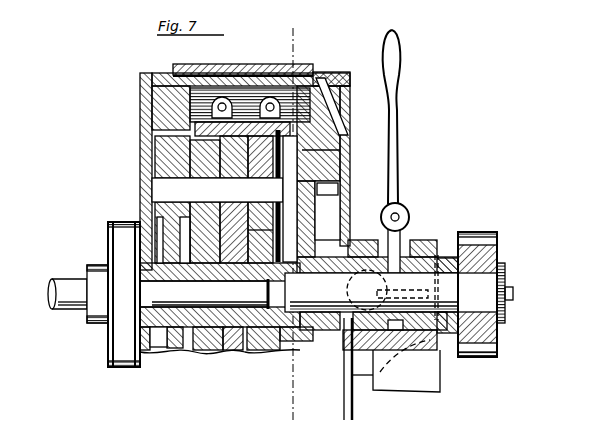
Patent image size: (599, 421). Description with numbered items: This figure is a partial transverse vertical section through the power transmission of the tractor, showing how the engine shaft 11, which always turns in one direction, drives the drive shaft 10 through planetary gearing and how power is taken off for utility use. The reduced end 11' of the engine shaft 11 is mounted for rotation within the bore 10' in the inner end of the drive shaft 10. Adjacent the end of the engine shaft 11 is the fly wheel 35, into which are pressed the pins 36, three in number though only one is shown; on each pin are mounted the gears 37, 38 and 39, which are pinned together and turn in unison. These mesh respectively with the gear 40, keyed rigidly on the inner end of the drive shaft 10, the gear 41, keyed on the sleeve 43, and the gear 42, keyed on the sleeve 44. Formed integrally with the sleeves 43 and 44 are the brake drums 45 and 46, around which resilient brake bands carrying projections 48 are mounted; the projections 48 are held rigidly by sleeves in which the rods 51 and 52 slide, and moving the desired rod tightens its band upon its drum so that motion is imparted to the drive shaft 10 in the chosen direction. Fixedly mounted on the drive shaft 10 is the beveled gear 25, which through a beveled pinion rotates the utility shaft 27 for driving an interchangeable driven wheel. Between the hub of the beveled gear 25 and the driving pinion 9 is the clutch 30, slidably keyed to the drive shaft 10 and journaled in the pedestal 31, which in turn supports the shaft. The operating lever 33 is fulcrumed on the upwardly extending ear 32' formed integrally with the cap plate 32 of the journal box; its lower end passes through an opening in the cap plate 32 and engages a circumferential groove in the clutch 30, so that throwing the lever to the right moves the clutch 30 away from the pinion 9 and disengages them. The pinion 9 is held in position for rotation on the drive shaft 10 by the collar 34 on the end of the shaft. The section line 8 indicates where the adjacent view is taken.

The section line 8- 8 is at (305, 23).
The driving pinion 9 is at (496, 249).
The drive shaft 10 is at (341, 280).
The bore 10' is at (112, 348).
The engine shaft 11 is at (65, 308).
The reduced end 11' is at (101, 309).
The beveled gear 25 is at (338, 133).
The utility shaft 27 is at (330, 356).
The clutch 30 is at (422, 240).
The pedestal 31 is at (441, 379).
The cap plate 32 is at (424, 219).
The ear 32' is at (431, 179).
The operating lever 33 is at (400, 67).
The collar 34 is at (505, 279).
The fly wheel 35 is at (162, 110).
The pins 36 is at (168, 188).
The gear 37 is at (223, 98).
The gear 38 is at (266, 98).
The gear 39 is at (346, 78).
The gear 40 is at (172, 366).
The gear 41 is at (203, 352).
The gear 42 is at (263, 349).
The sleeve 43 is at (230, 349).
The sleeve 44 is at (241, 351).
The brake drum 45 is at (302, 173).
The brake drum 46 is at (342, 196).
The projections 48 is at (300, 80).
The rod 51 is at (322, 80).
The rod 52 is at (238, 120).